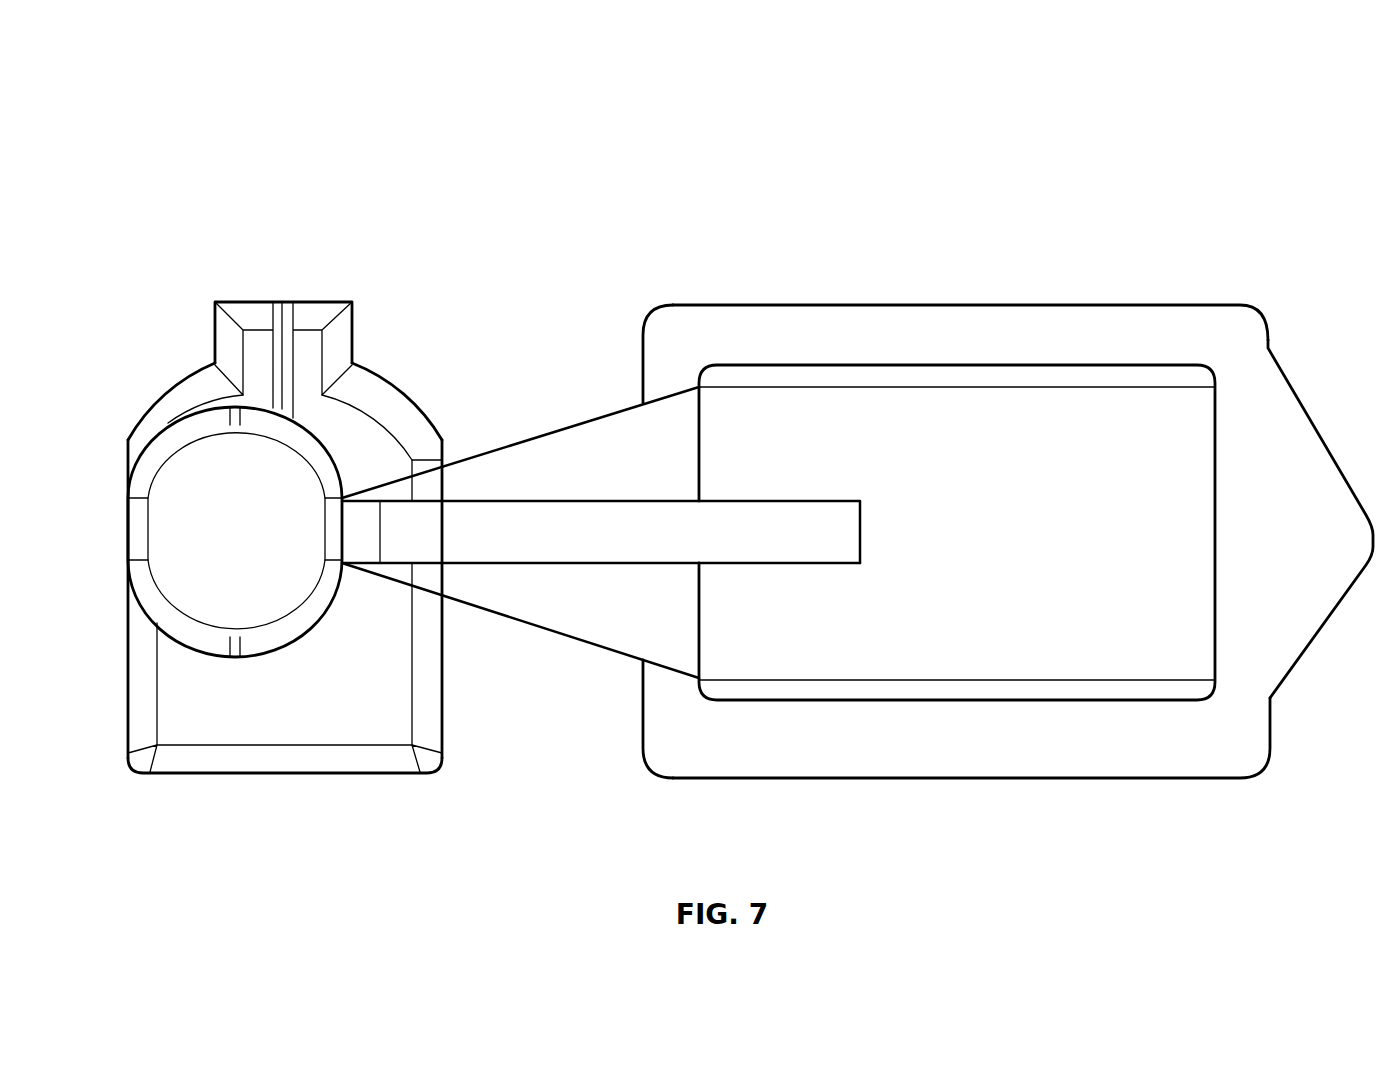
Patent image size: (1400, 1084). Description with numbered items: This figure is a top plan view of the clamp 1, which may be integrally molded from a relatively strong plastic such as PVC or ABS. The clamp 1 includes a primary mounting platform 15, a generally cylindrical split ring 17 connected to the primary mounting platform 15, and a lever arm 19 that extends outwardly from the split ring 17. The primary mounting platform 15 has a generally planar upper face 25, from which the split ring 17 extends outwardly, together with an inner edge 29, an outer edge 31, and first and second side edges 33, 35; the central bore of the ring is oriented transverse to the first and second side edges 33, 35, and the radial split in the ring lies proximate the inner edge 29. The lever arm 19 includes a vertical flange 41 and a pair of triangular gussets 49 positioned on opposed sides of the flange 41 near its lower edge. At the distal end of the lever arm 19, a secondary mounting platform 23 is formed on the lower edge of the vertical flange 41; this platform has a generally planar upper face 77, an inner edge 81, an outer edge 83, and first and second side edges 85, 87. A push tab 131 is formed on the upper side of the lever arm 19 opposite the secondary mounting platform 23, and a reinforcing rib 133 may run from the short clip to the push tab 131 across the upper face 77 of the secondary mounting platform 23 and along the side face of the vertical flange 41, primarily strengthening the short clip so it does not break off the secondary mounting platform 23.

The clamp 1 is at (208, 195).
The primary mounting platform 15 is at (1123, 303).
The split ring 17 is at (1096, 596).
The lever arm 19 is at (810, 500).
The secondary mounting platform 23 is at (377, 368).
The upper face 25 is at (1288, 543).
The inner edge 29 is at (643, 342).
The outer edge 31 is at (1318, 428).
The first side edge 33 is at (810, 303).
The second side edge 35 is at (895, 778).
The vertical flange 41 is at (827, 564).
The triangular gussets 49 is at (552, 432).
The upper face 77 is at (351, 706).
The inner edge 81 is at (442, 730).
The outer edge 83 is at (128, 683).
The first side edge 85 is at (170, 385).
The second side edge 87 is at (303, 775).
The push tab 131 is at (220, 544).
The reinforcing rib 133 is at (293, 306).